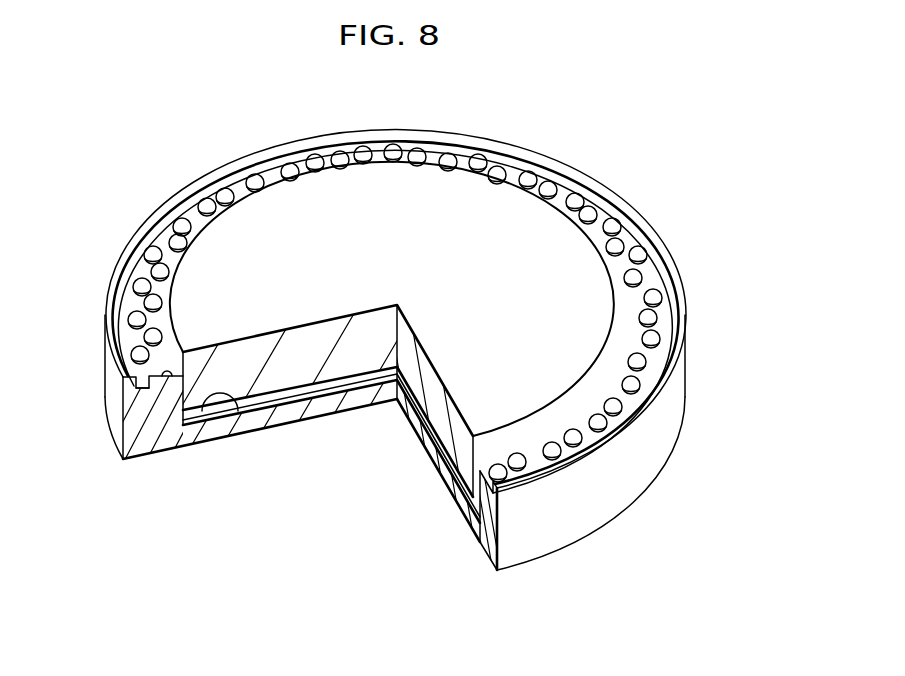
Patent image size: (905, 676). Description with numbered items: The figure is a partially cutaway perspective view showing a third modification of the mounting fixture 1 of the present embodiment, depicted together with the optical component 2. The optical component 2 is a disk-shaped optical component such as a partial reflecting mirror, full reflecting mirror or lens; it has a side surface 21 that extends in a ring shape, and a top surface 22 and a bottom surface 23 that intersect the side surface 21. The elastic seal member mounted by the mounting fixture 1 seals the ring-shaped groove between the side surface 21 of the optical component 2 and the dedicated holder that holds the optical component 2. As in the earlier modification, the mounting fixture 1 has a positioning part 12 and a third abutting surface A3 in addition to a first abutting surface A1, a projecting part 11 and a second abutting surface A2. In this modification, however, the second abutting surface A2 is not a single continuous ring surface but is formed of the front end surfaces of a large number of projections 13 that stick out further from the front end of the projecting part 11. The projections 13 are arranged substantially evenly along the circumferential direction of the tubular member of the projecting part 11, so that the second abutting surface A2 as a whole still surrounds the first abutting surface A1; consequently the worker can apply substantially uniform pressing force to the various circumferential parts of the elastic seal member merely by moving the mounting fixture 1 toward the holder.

The mounting fixture 1 is at (136, 203).
The optical component 2 is at (492, 214).
The projecting part 11 is at (490, 503).
The positioning part 12 is at (498, 504).
The projections 13 is at (653, 297).
The side surface 21 is at (516, 458).
The top surface 22 is at (334, 383).
The bottom surface 23 is at (303, 327).
The first abutting surface A1 is at (238, 411).
The second abutting surface A2 is at (158, 376).
The third abutting surface A3 is at (133, 378).